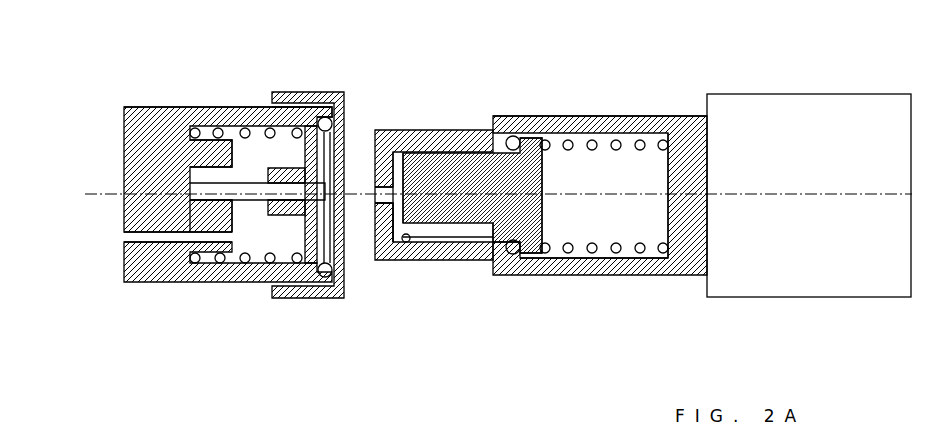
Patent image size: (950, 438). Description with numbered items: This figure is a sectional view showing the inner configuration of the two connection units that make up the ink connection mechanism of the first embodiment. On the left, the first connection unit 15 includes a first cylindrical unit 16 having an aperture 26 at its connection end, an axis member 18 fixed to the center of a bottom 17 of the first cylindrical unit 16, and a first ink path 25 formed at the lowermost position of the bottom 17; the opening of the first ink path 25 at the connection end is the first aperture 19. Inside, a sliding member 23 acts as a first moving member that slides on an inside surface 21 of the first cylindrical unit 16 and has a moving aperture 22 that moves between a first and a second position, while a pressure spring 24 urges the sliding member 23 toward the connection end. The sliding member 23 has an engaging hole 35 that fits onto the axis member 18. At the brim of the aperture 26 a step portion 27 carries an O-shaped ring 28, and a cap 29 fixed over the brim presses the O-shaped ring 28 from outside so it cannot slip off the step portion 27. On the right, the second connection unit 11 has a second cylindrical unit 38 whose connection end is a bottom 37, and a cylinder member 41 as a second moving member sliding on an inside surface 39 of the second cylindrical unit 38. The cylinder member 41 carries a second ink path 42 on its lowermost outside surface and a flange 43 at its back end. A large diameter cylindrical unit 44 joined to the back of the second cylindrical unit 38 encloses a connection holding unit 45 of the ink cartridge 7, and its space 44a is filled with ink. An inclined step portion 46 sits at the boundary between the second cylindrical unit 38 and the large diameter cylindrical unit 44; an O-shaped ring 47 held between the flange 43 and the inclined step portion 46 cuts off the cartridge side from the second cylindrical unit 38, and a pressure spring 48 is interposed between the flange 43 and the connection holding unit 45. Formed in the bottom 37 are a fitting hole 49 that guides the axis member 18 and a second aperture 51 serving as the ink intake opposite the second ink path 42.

The ink cartridge 7 is at (805, 105).
The second connection unit 11 is at (682, 102).
The first connection unit 15 is at (217, 100).
The first cylindrical unit 16 is at (142, 133).
The bottom 17 is at (235, 162).
The axis member 18 is at (205, 191).
The first aperture 19 is at (228, 263).
The inside surface 21 is at (257, 128).
The moving aperture 22 is at (345, 128).
The sliding member 23 is at (277, 217).
The pressure spring 24 is at (218, 272).
The first ink path 25 is at (135, 235).
The aperture 26 is at (323, 237).
The step portion 27 is at (320, 124).
The O-shaped ring 28 is at (315, 147).
The cap 29 is at (323, 118).
The engaging hole 35 is at (300, 200).
The bottom 37 is at (402, 153).
The second cylindrical unit 38 is at (437, 133).
The inside surface 39 is at (408, 242).
The cylinder member 41 is at (445, 158).
The second ink path 42 is at (440, 228).
The flange 43 is at (548, 225).
The large diameter cylindrical unit 44 is at (658, 117).
The space 44a is at (612, 228).
The connection holding unit 45 is at (665, 222).
The inclined step portion 46 is at (513, 136).
The O-shaped ring 47 is at (535, 140).
The pressure spring 48 is at (593, 142).
The fitting hole 49 is at (378, 187).
The second aperture 51 is at (380, 232).